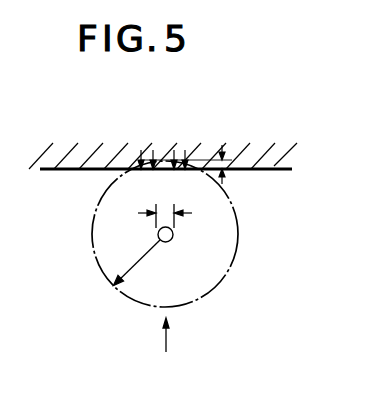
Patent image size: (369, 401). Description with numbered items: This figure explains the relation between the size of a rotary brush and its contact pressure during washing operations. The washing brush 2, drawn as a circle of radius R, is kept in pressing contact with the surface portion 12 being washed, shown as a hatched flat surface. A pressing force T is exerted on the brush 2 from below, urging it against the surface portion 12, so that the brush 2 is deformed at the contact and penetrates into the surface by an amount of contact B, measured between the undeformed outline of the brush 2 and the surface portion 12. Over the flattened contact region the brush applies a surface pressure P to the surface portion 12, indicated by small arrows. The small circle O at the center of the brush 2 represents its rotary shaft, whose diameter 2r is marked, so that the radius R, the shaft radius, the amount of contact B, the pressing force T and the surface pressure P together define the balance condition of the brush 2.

The washing brush 2 is at (236, 254).
The surface portion 12 is at (272, 170).
The surface pressure P is at (185, 145).
The amount of contact B is at (232, 173).
The rotary shaft diameter 2r is at (165, 203).
The tire center O is at (165, 234).
The radius of the brush R is at (145, 252).
The pressing force T is at (165, 355).